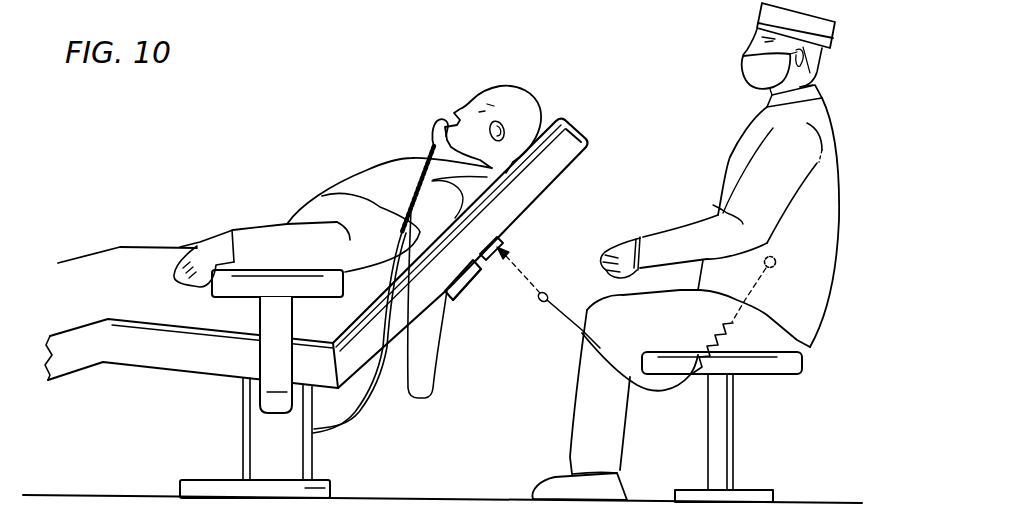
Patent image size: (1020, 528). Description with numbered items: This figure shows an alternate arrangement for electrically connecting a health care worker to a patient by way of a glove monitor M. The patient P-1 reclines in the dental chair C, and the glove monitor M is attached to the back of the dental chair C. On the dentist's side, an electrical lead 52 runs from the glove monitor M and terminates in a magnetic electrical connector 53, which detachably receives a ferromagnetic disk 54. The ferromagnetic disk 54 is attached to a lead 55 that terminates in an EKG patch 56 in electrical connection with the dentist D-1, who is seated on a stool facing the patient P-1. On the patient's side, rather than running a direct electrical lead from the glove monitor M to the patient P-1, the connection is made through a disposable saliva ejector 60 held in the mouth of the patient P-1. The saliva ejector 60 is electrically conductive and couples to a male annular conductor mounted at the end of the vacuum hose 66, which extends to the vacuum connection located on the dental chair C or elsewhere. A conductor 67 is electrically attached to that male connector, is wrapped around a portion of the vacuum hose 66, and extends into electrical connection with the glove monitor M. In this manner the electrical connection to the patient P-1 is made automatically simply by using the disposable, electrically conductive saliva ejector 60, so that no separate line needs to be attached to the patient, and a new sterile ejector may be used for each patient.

The disposable saliva ejector 60 is at (440, 120).
The patient P-1 is at (352, 174).
The dentist D-1 is at (827, 212).
The electrical lead 52 is at (482, 266).
The glove monitor M is at (465, 294).
The magnetic electrical connector 53 is at (500, 240).
The ferromagnetic disk 54 is at (545, 293).
The lead 55 is at (603, 350).
The EKG patch 56 is at (778, 266).
The vacuum hose 66 is at (373, 385).
The conductor 67 is at (433, 380).
The dental chair C is at (148, 357).